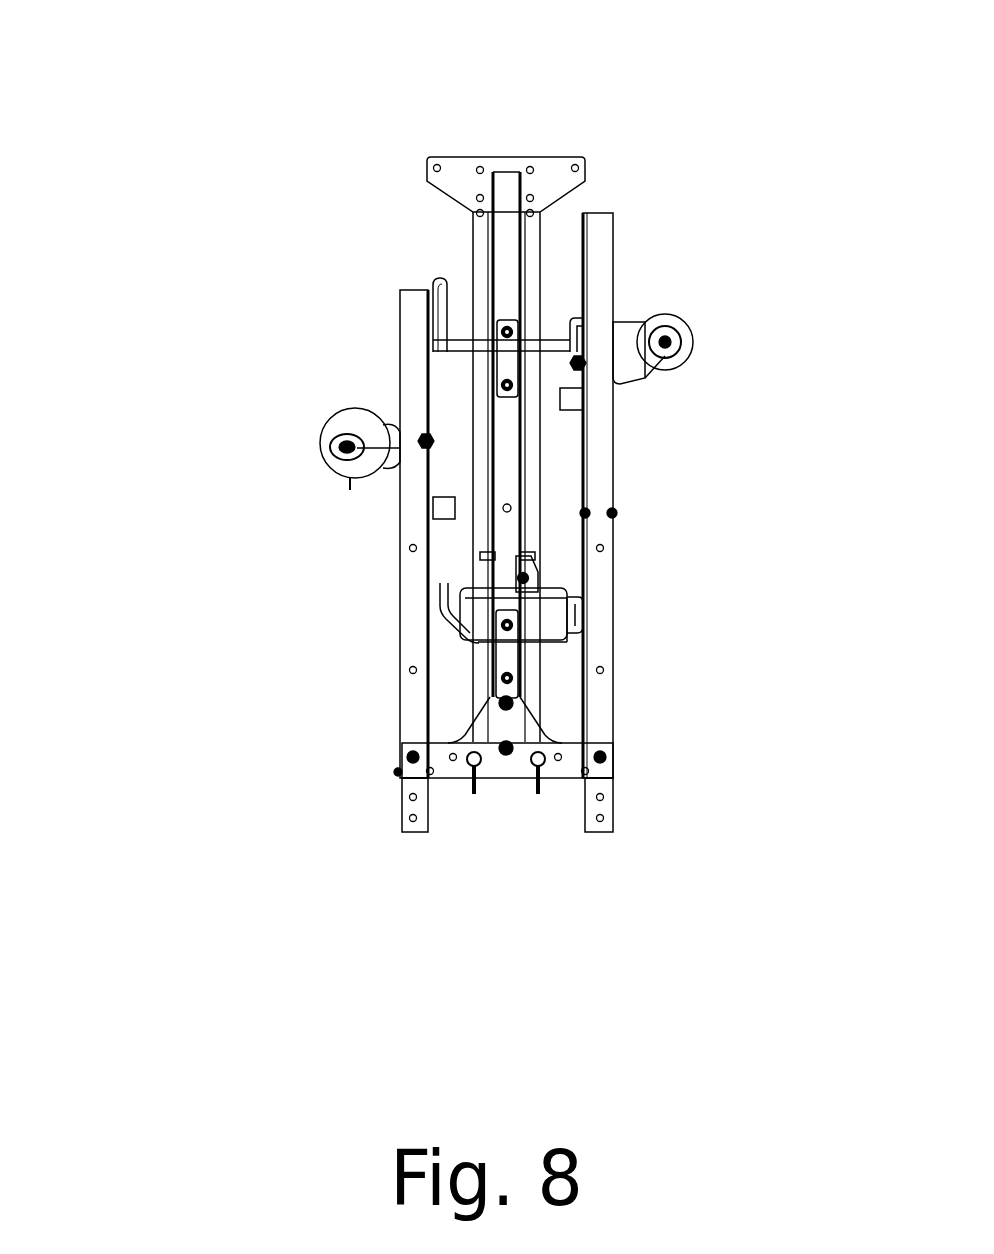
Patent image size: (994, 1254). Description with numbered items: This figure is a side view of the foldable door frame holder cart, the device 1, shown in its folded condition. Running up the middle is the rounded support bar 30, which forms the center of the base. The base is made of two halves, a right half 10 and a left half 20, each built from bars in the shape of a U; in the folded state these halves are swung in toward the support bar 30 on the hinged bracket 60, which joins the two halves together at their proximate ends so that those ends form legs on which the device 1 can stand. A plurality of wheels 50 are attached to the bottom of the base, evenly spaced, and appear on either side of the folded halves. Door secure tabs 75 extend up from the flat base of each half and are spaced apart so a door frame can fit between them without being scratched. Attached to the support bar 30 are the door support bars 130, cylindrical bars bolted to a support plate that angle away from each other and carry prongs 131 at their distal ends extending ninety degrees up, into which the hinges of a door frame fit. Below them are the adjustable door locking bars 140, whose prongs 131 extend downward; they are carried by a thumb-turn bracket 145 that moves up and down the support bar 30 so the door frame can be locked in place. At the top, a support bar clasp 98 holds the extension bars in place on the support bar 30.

The device 1 is at (353, 135).
The right half 10 is at (598, 718).
The left half 20 is at (410, 722).
The support bar 30 is at (505, 262).
The wheels 50 is at (700, 340).
The hinged bracket 60 is at (497, 762).
The door secure tabs 75 is at (575, 402).
The support bar clasp 98 is at (528, 172).
The door support bars 130 is at (435, 340).
The prongs 131 is at (435, 290).
The adjustable door locking bars 140 is at (580, 585).
The thumb-turn bracket 145 is at (515, 565).